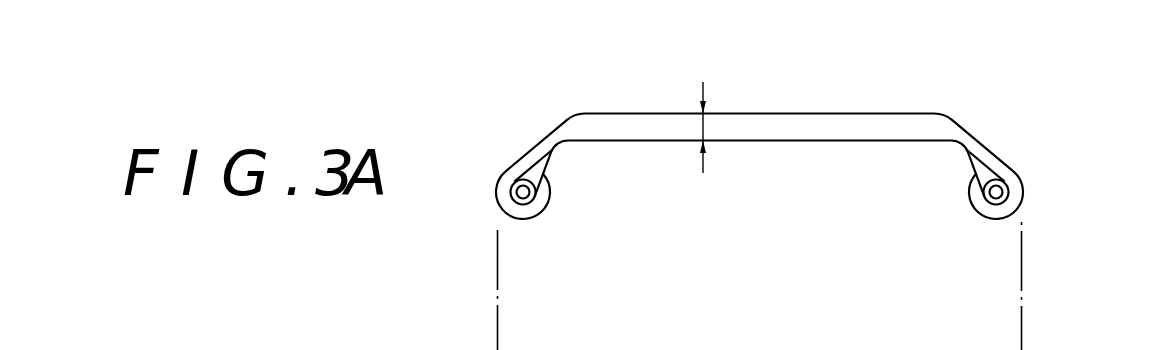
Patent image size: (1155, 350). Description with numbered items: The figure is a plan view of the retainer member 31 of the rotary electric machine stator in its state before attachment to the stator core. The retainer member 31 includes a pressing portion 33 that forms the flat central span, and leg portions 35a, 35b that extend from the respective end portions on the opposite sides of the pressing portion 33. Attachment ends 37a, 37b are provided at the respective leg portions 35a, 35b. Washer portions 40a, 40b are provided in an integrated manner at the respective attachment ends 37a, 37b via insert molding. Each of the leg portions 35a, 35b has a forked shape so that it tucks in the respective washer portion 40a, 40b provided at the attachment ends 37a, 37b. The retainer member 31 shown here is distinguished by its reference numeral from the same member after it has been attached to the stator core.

The retainer member 31 is at (597, 100).
The pressing portion 33 is at (790, 128).
The leg portion 35a is at (549, 164).
The leg portion 35b is at (985, 149).
The attachment end 37a is at (527, 210).
The attachment end 37b is at (984, 204).
The washer portion 40a is at (533, 204).
The washer portion 40b is at (1008, 189).